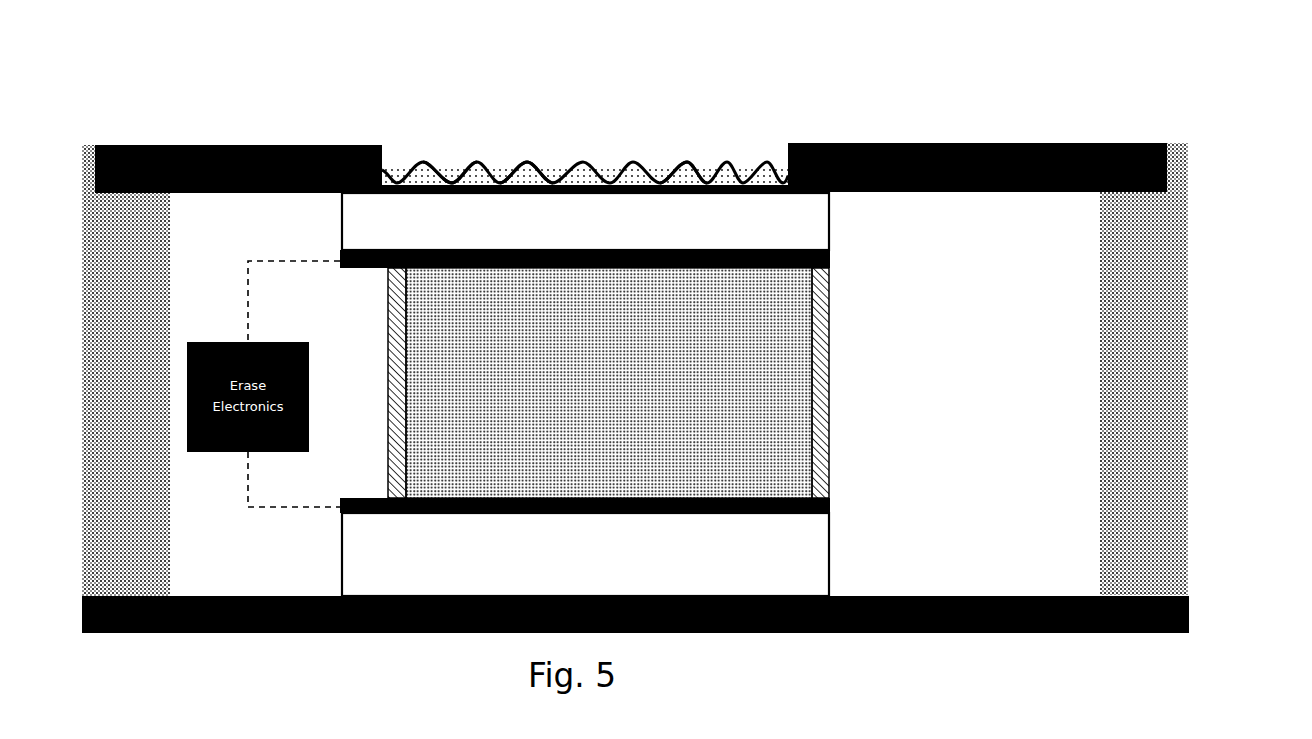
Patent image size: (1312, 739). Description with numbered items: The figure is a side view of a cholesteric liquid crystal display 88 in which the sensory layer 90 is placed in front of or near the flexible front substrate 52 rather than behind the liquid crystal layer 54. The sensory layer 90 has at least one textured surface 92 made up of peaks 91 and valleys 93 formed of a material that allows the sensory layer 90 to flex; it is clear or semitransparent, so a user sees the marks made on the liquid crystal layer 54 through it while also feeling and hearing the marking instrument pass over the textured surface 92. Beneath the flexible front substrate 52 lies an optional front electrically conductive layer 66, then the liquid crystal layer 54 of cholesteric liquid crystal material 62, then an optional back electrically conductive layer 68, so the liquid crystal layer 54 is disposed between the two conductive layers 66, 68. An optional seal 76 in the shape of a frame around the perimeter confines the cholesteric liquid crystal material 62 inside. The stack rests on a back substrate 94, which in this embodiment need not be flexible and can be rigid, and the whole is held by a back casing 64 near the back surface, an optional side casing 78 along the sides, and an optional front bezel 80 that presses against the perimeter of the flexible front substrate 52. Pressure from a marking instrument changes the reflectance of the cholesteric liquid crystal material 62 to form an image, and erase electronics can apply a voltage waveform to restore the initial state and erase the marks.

The flexible front substrate 52 is at (832, 210).
The liquid crystal layer 54 is at (773, 343).
The cholesteric liquid crystal material 62 is at (737, 402).
The back casing 64 is at (1188, 615).
The front electrically conductive layer 66 is at (832, 262).
The back electrically conductive layer 68 is at (830, 505).
The seal 76 is at (386, 315).
The side casing 78 is at (1187, 387).
The front bezel 80 is at (937, 143).
The cholesteric liquid crystal display 88 is at (1210, 94).
The sensory layer 90 is at (735, 171).
The peaks 91 is at (527, 163).
The textured surface 92 is at (682, 163).
The valleys 93 is at (452, 183).
The back substrate 94 is at (765, 547).